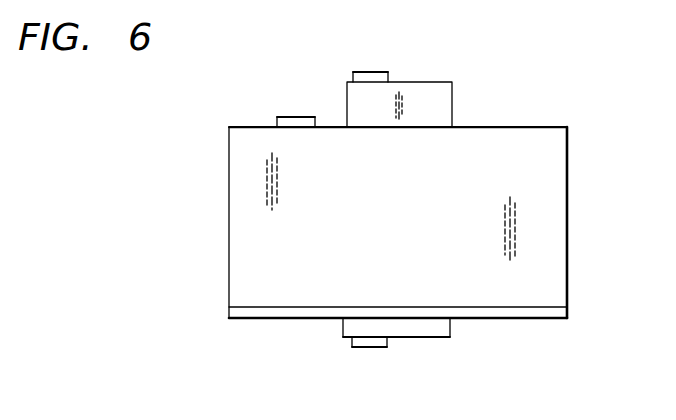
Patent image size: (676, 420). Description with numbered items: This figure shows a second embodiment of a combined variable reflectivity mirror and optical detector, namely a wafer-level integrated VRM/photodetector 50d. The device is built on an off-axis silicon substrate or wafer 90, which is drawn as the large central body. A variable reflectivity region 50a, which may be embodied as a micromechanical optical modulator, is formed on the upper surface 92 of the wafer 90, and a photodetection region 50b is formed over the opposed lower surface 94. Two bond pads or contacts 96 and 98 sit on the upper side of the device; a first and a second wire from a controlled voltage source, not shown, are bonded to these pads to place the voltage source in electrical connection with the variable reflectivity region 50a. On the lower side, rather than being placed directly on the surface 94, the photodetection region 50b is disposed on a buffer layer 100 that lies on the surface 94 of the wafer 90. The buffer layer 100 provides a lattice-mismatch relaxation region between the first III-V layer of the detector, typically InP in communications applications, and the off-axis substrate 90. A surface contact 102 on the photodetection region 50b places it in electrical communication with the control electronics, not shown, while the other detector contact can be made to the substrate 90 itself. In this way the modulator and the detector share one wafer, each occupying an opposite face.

The wafer-level integrated VRM/photodetector 50d is at (199, 106).
The variable reflectivity region 50a is at (423, 93).
The photodetection region 50b is at (422, 338).
The off-axis silicon substrate 90 is at (407, 234).
The surface 92 is at (542, 128).
The surface 94 is at (248, 303).
The bond pad 96 is at (297, 116).
The bond pad 98 is at (368, 70).
The buffer layer 100 is at (542, 320).
The surface contact 102 is at (360, 348).